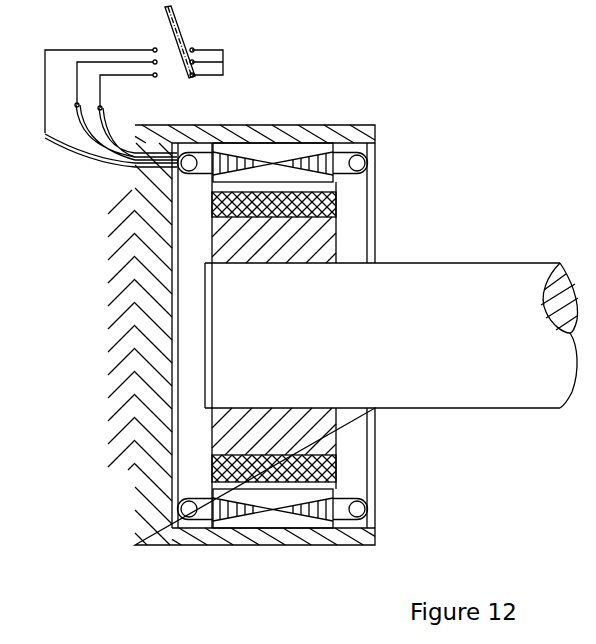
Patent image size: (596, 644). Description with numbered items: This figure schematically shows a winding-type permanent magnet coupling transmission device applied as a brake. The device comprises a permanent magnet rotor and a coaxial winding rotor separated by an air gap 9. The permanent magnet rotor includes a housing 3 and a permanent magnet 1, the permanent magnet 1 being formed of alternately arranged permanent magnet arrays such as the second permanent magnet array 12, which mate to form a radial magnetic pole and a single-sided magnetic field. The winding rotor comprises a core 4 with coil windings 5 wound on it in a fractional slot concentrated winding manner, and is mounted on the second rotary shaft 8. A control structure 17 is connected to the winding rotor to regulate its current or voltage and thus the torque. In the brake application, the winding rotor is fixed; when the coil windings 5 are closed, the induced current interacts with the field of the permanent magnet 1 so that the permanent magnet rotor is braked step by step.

The permanent magnet 1 is at (243, 468).
The housing 3 is at (243, 238).
The core 4 is at (317, 147).
The coil winding 5 is at (360, 163).
The second rotary shaft 8 is at (390, 368).
The air gap 9 is at (333, 486).
The second permanent magnet array 12 is at (328, 540).
The control structure 17 is at (167, 23).